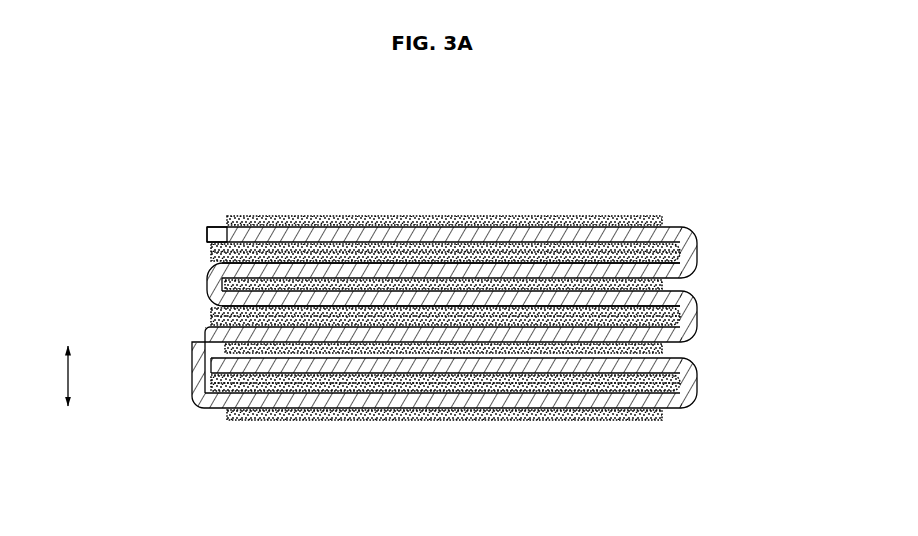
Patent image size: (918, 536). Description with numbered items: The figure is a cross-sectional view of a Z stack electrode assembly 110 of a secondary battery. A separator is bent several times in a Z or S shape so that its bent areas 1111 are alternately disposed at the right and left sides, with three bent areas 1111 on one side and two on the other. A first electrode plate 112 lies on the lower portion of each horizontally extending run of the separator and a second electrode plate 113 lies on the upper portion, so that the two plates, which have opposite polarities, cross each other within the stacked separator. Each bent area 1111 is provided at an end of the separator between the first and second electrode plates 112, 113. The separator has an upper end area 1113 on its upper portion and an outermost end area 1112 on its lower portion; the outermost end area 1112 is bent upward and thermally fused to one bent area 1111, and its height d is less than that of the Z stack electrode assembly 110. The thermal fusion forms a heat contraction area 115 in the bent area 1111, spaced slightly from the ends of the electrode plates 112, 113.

The Z stack electrode assembly 110 is at (126, 141).
The bent area 1111 is at (207, 283).
The outermost end area 1112 is at (193, 372).
The upper end area 1113 is at (207, 236).
The first electrode plate 112 is at (413, 229).
The second electrode plate 113 is at (552, 265).
The heat contraction area 115 is at (677, 387).